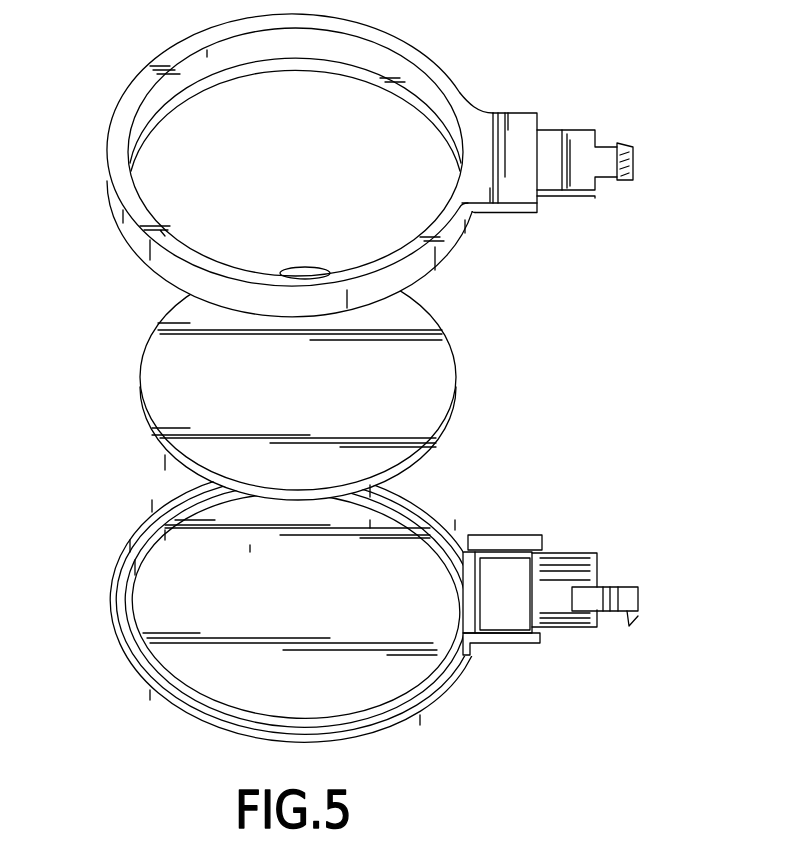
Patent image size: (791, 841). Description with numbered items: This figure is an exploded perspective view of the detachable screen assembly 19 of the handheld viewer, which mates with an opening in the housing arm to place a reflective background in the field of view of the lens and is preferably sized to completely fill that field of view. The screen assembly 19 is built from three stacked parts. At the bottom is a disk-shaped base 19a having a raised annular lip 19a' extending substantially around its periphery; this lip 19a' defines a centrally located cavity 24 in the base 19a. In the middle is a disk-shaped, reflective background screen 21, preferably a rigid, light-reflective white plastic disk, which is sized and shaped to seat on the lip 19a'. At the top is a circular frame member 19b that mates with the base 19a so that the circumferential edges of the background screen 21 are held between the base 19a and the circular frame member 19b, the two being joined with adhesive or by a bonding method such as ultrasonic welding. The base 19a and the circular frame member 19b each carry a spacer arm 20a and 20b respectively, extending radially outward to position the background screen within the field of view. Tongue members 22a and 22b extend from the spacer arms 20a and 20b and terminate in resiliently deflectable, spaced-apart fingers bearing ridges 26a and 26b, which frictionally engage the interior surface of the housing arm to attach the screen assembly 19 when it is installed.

The screen assembly 19 is at (74, 318).
The base 19a is at (296, 620).
The raised annular lip 19a' is at (106, 517).
The circular frame member 19b is at (366, 36).
The spacer arm 20a is at (493, 535).
The spacer arm 20b is at (493, 118).
The background screen 21 is at (443, 372).
The tongue member 22a is at (602, 552).
The tongue member 22b is at (580, 137).
The cavity 24 is at (192, 658).
The ridge 26a is at (633, 618).
The ridge 26b is at (635, 155).